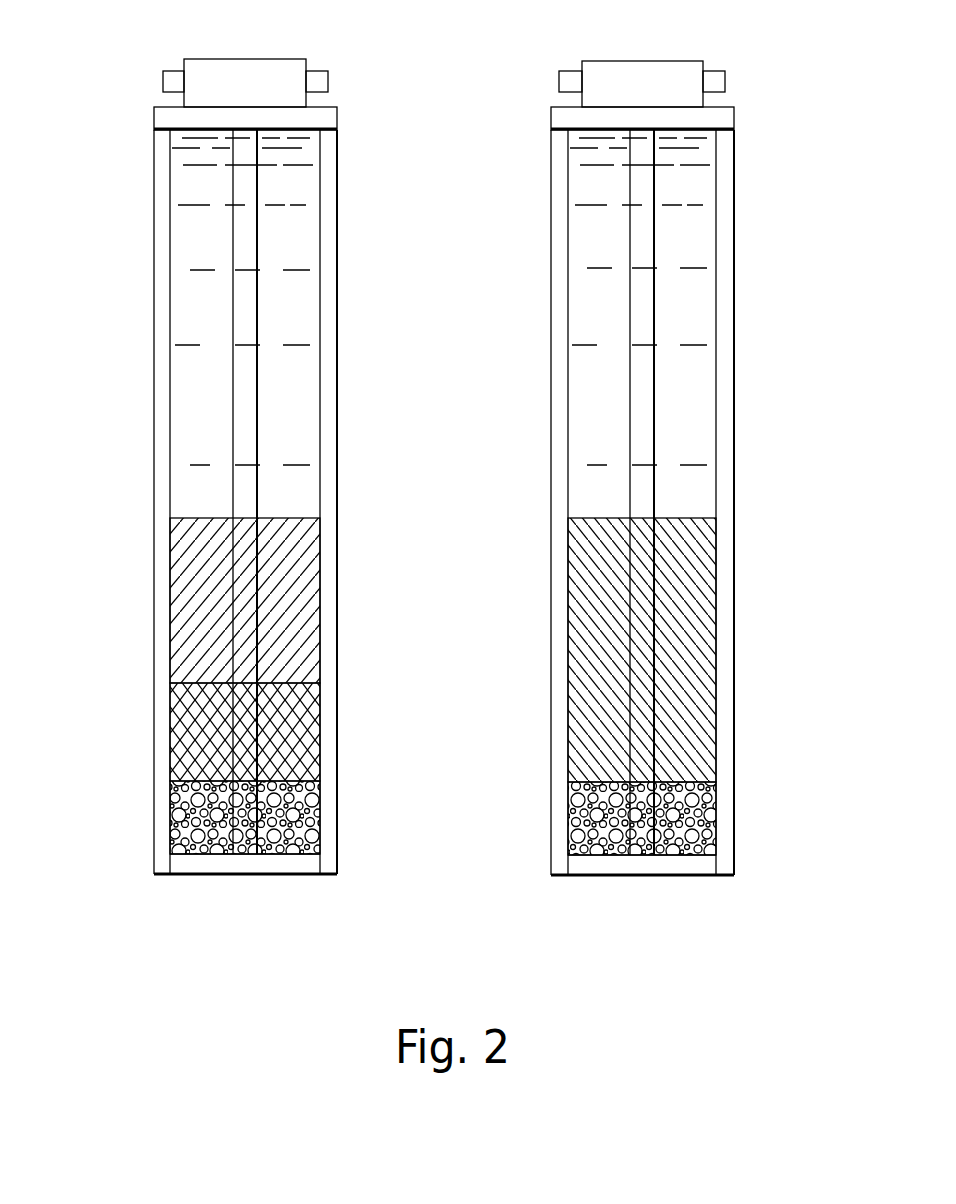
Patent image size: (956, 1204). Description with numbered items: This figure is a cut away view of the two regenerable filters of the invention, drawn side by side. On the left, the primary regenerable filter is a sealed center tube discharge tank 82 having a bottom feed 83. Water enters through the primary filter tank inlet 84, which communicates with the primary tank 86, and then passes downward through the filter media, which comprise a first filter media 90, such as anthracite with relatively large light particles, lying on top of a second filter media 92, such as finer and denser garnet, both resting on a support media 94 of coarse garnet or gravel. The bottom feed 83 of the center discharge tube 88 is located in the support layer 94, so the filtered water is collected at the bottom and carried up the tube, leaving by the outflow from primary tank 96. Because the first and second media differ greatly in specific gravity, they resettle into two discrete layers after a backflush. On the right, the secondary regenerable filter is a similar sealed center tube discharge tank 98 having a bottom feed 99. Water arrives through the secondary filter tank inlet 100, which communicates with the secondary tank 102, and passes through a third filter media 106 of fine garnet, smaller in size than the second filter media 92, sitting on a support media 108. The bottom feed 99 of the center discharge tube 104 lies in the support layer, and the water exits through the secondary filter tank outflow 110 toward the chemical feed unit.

The center tube discharge tank 82 is at (90, 325).
The bottom feed 83 is at (247, 854).
The primary filter tank inlet 84 is at (163, 81).
The primary tank 86 is at (183, 222).
The center discharge tube 88 is at (250, 238).
The first filter media 90 is at (187, 548).
The second filter media 92 is at (187, 727).
The support media 94 is at (187, 815).
The outflow from primary tank 96 is at (330, 81).
The center tube discharge tank 98 is at (822, 329).
The bottom feed 99 is at (640, 855).
The secondary filter tank inlet 100 is at (559, 85).
The secondary tank 102 is at (695, 238).
The center discharge tube 104 is at (645, 410).
The third filter media 106 is at (697, 615).
The support media 108 is at (713, 802).
The secondary filter tank outflow 110 is at (726, 82).